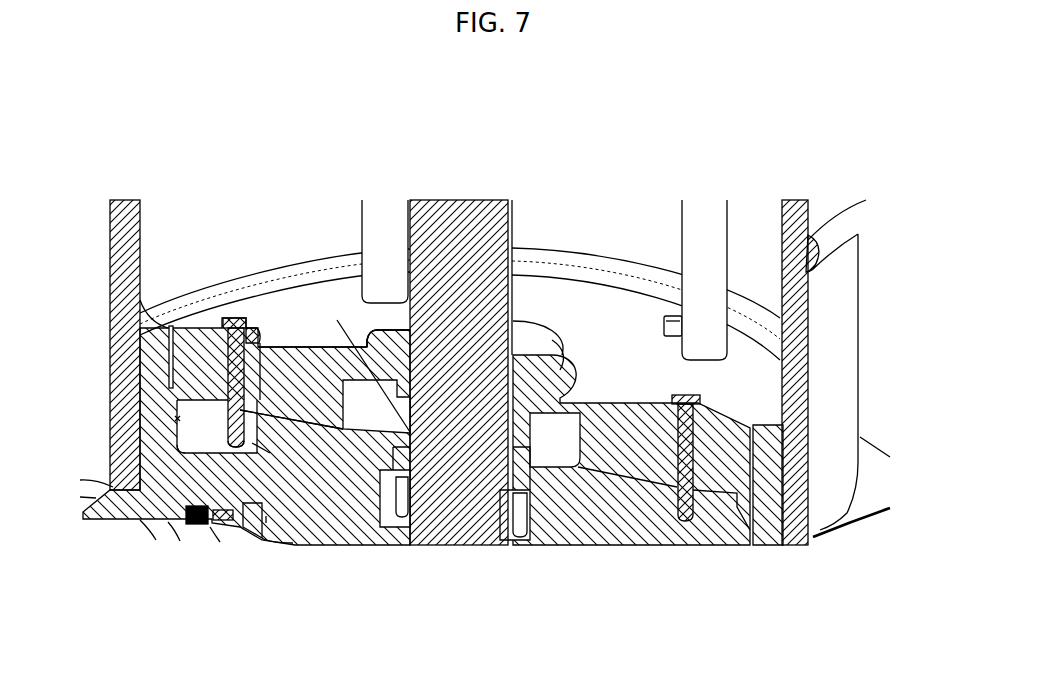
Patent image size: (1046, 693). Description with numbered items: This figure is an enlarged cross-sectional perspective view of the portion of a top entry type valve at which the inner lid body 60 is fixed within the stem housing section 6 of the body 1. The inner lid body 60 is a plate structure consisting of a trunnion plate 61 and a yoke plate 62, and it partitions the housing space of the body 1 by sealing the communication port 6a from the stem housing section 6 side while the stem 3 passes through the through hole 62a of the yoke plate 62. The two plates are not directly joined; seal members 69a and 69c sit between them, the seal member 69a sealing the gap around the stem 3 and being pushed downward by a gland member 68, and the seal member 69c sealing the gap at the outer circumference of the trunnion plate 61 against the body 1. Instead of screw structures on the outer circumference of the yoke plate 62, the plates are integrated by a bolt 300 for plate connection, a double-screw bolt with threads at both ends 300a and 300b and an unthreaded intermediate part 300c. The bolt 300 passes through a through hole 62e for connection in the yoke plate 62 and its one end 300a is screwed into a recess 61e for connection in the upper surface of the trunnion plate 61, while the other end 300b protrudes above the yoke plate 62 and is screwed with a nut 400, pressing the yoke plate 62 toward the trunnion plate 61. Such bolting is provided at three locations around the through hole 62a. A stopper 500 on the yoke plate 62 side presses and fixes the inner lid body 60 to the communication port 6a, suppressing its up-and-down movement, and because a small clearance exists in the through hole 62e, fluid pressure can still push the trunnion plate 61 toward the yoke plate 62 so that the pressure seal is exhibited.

The body 1 is at (498, 372).
The stem housing section 6 is at (118, 340).
The stem 3 is at (463, 208).
The inner lid body 60 is at (246, 478).
The trunnion plate 61 is at (361, 500).
The recess for connection 61e is at (236, 448).
The yoke plate 62 is at (320, 410).
The through hole 62a is at (410, 338).
The through hole for connection 62e is at (227, 368).
The gland member 68 is at (337, 322).
The seal member 69a is at (340, 355).
The seal member 69c is at (176, 418).
The communication port 6a is at (178, 448).
The bolt for plate connection 300 is at (176, 328).
The one end 300a is at (266, 422).
The other end 300b is at (266, 336).
The intermediate part 300c is at (266, 380).
The nut 400 is at (183, 318).
The stopper 500 is at (386, 210).